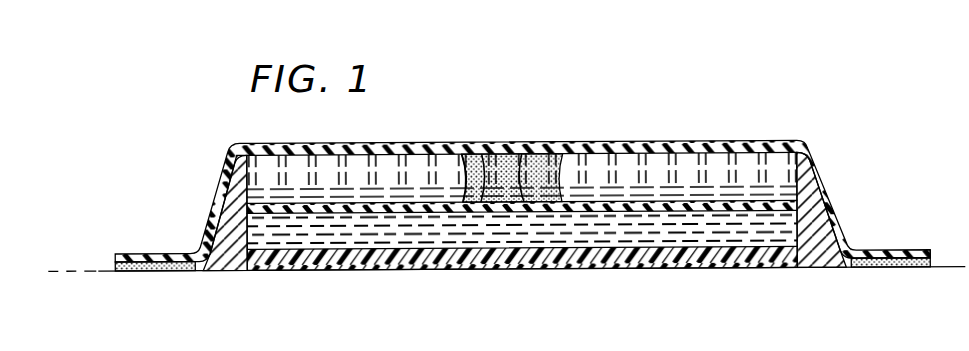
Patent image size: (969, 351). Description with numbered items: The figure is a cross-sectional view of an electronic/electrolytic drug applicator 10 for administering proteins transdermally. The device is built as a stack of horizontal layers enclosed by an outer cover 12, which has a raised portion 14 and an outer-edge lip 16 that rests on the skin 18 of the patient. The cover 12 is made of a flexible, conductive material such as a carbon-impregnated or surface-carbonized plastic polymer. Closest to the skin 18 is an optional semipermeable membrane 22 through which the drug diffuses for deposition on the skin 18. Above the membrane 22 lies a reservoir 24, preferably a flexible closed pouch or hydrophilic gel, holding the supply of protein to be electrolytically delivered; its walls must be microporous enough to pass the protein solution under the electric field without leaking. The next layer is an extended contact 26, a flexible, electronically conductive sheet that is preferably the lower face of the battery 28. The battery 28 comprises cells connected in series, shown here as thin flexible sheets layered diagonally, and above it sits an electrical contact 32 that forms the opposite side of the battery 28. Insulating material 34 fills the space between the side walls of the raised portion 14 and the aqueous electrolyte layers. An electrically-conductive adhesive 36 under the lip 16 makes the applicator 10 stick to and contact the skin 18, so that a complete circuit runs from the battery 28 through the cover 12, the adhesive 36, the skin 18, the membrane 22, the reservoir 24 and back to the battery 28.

The drug applicator 10 is at (590, 133).
The outer cover 12 is at (214, 196).
The raised portion 14 is at (340, 144).
The outer-edge lip 16 is at (908, 250).
The skin 18 is at (946, 266).
The semipermeable membrane 22 is at (558, 268).
The reservoir 24 is at (328, 253).
The extended contact 26 is at (517, 153).
The battery 28 is at (786, 172).
The electrical contact 32 is at (462, 153).
The insulating material 34 is at (228, 238).
The electrically-conductive adhesive 36 is at (140, 272).